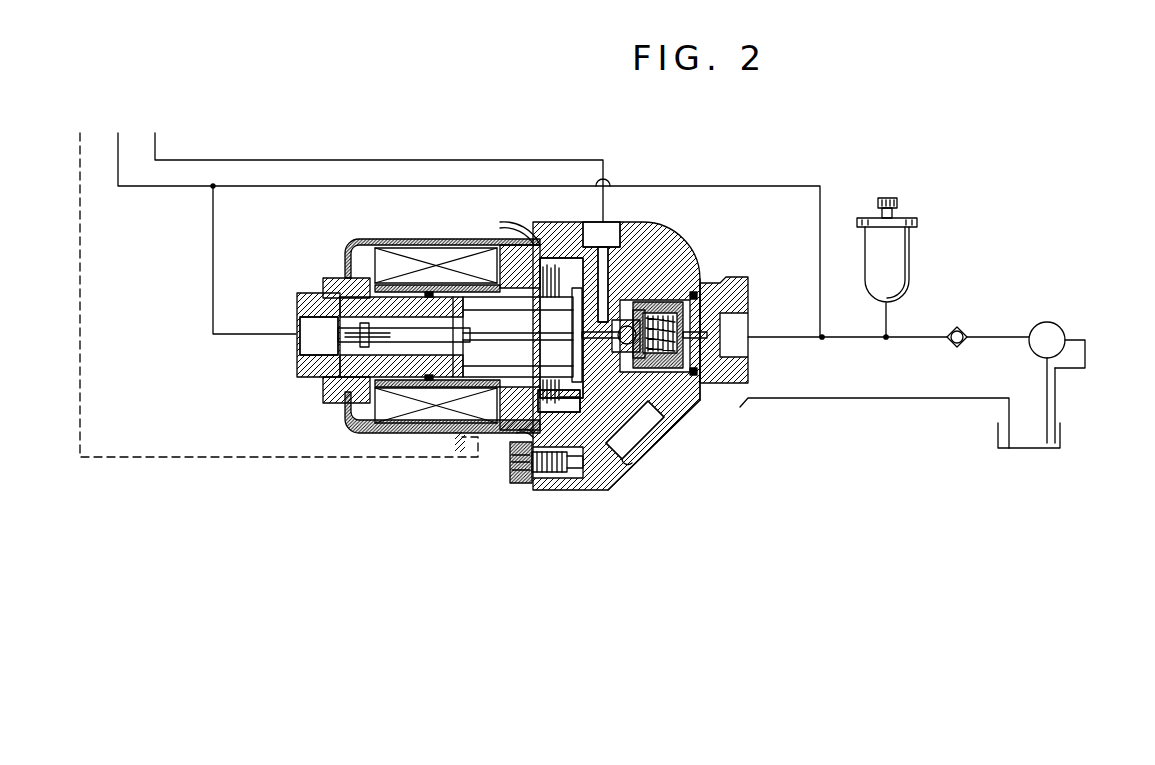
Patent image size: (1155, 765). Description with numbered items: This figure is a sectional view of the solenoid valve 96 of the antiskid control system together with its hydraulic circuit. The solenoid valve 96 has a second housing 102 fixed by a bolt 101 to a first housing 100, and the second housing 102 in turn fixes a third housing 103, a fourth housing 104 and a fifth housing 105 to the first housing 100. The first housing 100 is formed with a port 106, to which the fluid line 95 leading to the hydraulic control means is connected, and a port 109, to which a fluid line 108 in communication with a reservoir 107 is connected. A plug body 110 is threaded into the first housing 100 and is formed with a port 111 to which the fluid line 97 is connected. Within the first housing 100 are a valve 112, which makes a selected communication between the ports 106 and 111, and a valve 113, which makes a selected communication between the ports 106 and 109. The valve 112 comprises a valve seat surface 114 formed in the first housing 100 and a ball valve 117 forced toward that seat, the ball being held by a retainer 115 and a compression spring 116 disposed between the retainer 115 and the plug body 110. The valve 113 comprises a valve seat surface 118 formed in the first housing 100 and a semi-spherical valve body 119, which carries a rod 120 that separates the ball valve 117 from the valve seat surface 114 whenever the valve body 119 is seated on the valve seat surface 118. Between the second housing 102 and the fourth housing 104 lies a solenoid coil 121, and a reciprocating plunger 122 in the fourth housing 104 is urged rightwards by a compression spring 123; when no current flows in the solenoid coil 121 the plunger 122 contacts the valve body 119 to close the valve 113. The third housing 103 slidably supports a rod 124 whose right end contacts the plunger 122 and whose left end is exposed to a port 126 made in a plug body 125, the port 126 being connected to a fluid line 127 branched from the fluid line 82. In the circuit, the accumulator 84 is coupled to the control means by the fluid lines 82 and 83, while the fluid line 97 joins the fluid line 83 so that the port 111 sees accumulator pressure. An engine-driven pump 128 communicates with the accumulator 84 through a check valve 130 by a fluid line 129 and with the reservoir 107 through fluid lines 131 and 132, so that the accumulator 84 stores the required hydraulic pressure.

The fluid line 82 is at (822, 318).
The fluid line 83 is at (859, 339).
The accumulator 84 is at (914, 268).
The fluid line 95 is at (297, 160).
The solenoid valve 96 is at (681, 246).
The fluid line 97 is at (797, 339).
The first housing 100 is at (556, 222).
The bolt 101 is at (523, 484).
The second housing 102 is at (428, 436).
The third housing 103 is at (336, 396).
The fourth housing 104 is at (470, 305).
The fifth housing 105 is at (504, 442).
The port 106 is at (611, 231).
The reservoir 107 is at (1033, 449).
The fluid line 108 is at (861, 399).
The port 109 is at (627, 466).
The plug body 110 is at (727, 380).
The port 111 is at (752, 316).
The valve 112 is at (612, 312).
The valve 113 is at (580, 410).
The valve seat surface 114 is at (623, 347).
The retainer 115 is at (668, 357).
The compression spring 116 is at (676, 300).
The ball valve 117 is at (634, 363).
The valve seat surface 118 is at (570, 354).
The valve body 119 is at (568, 336).
The rod 120 is at (580, 323).
The solenoid coil 121 is at (440, 247).
The plunger 122 is at (471, 285).
The compression spring 123 is at (527, 239).
The rod 124 is at (458, 335).
The plug body 125 is at (298, 371).
The port 126 is at (302, 344).
The fluid line 127 is at (213, 309).
The pump 128 is at (1058, 332).
The fluid line 129 is at (1009, 336).
The check valve 130 is at (951, 341).
The fluid line 131 is at (1045, 387).
The fluid line 132 is at (1085, 354).